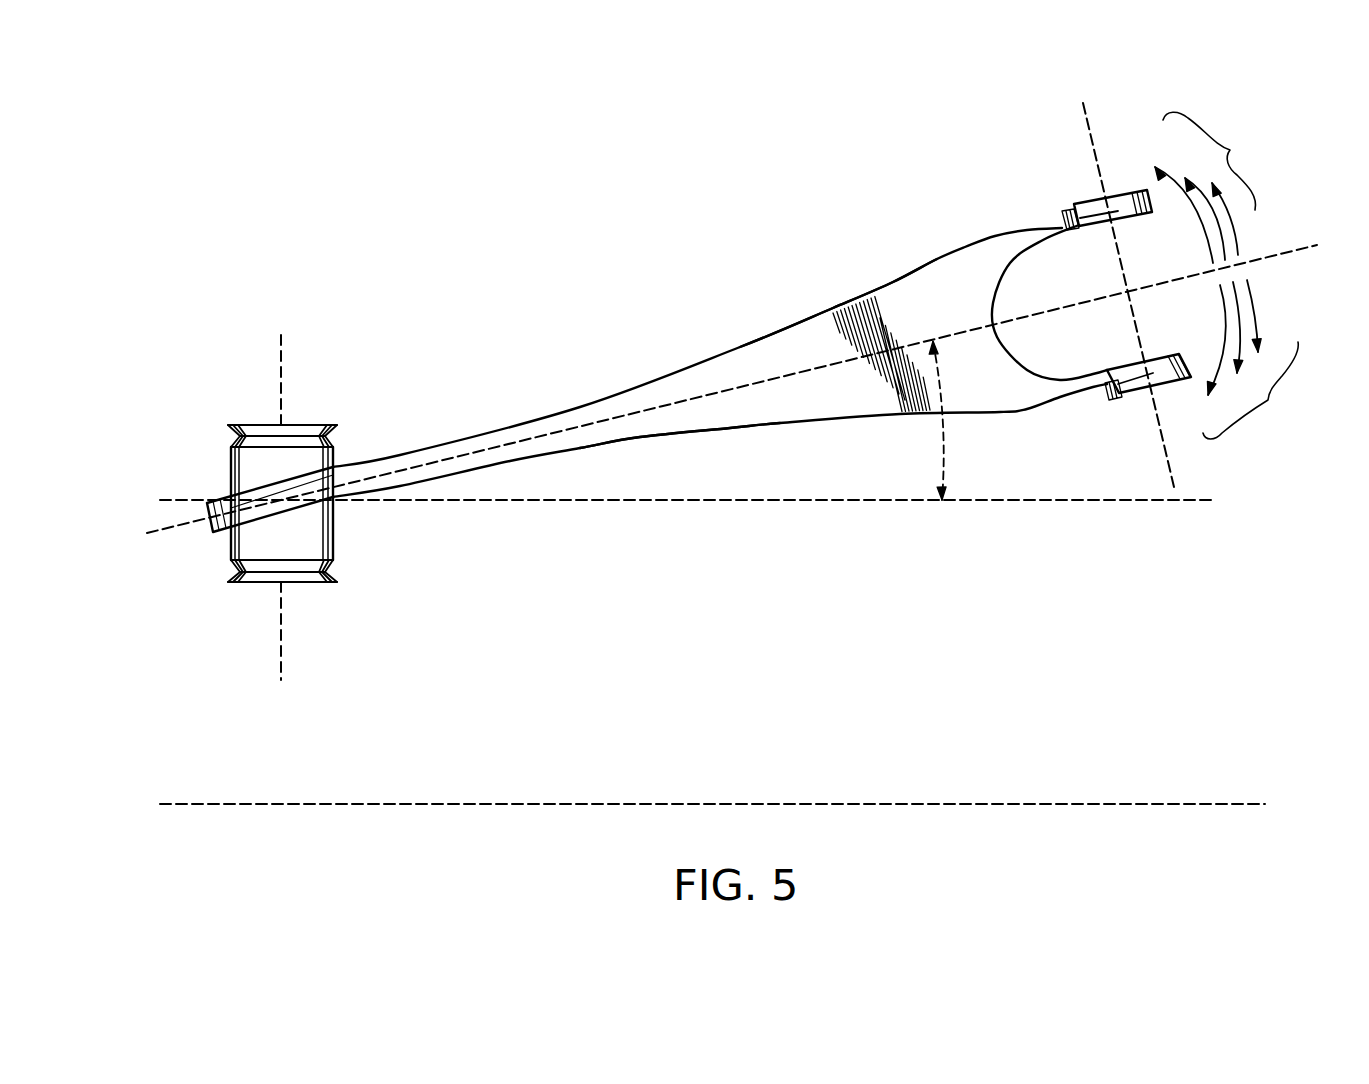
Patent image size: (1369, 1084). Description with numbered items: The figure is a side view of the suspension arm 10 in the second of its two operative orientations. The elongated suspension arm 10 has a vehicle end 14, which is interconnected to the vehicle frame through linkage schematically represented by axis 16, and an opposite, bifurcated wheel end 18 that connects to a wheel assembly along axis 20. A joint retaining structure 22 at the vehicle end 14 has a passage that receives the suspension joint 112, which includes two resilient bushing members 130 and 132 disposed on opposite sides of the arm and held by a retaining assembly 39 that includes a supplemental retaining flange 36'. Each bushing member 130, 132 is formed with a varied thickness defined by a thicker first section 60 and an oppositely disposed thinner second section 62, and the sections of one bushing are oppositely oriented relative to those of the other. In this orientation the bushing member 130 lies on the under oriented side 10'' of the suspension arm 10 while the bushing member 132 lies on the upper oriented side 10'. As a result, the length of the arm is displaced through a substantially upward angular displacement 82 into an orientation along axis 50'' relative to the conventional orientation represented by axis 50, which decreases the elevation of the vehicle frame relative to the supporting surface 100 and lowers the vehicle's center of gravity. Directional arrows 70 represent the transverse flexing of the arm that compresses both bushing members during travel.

The suspension arm 10 is at (720, 359).
The upper oriented side 10' is at (838, 262).
The under oriented side 10'' is at (684, 494).
The vehicle end 14 is at (195, 537).
The axis 16 is at (280, 350).
The wheel end 18 is at (1010, 215).
The axis 20 is at (1170, 457).
The joint retaining structure 22 is at (229, 495).
The supplemental retaining flange 36' is at (232, 526).
The retaining assembly 39 is at (252, 415).
The axis 50 is at (686, 556).
The axis 50'' is at (758, 389).
The first section 60 is at (240, 457).
The second section 62 is at (333, 456).
The directional arrows 70 is at (1230, 275).
The angular displacement 82 is at (944, 450).
The supporting surface 100 is at (1053, 804).
The suspension joint 112 is at (342, 430).
The bushing member 130 is at (293, 550).
The bushing member 132 is at (293, 462).